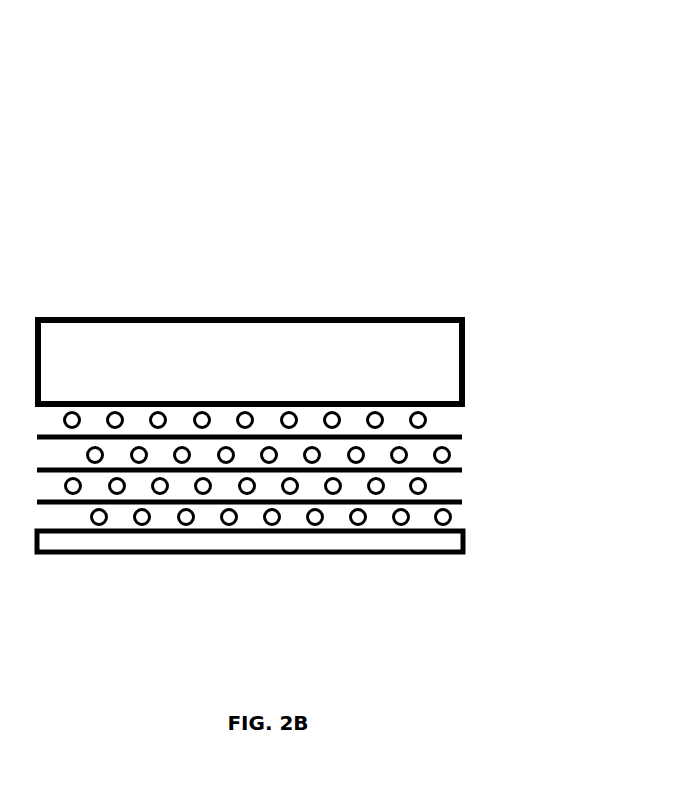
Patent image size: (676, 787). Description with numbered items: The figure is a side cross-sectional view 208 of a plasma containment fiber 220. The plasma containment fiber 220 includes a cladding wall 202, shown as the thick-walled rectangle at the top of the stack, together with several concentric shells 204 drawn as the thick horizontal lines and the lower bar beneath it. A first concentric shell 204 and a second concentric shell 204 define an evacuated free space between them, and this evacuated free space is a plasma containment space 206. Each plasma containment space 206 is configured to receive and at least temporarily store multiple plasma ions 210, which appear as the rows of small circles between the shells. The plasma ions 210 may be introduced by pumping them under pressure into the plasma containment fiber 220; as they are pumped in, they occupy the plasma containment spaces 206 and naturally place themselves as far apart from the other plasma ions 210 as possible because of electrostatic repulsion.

The cladding wall 202 is at (240, 360).
The concentric shells 204 is at (462, 437).
The plasma containment space 206 is at (468, 415).
The side cross-sectional view 208 is at (262, 37).
The plasma ions 210 is at (138, 522).
The plasma containment fiber 220 is at (170, 218).